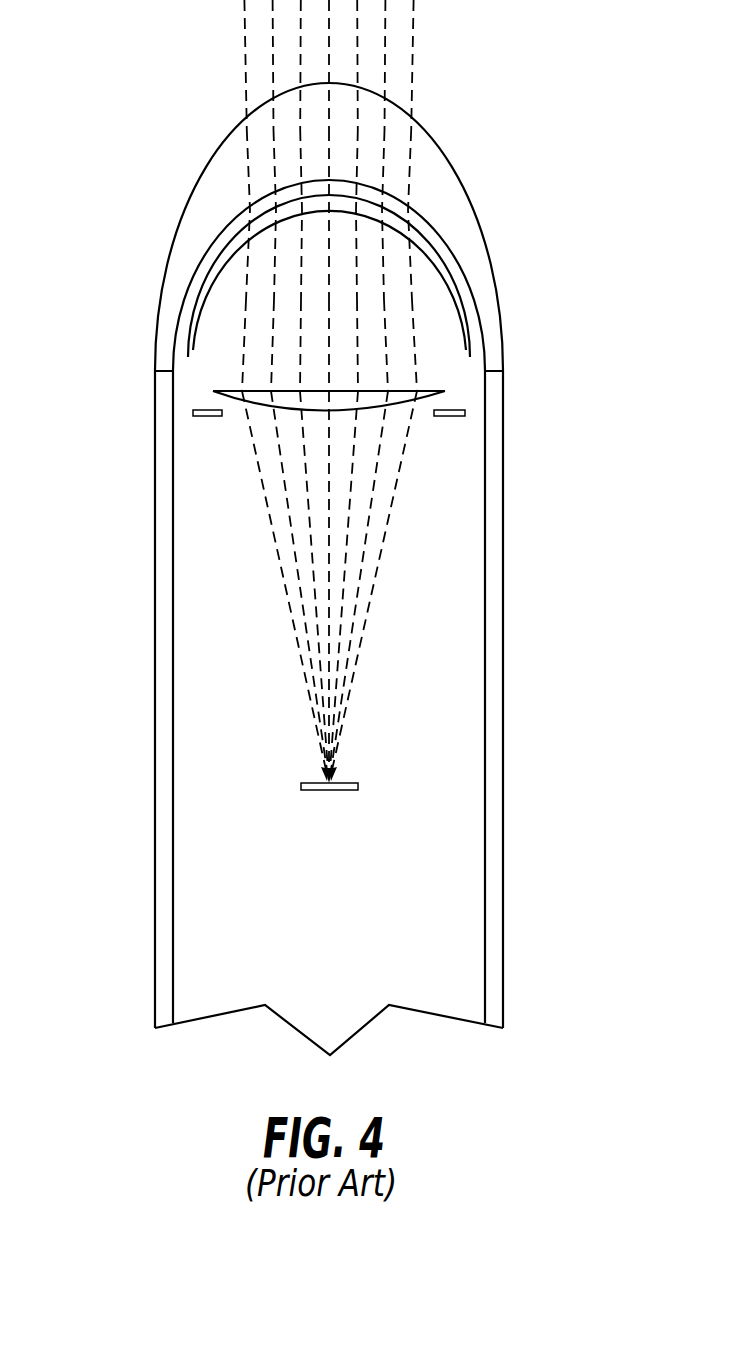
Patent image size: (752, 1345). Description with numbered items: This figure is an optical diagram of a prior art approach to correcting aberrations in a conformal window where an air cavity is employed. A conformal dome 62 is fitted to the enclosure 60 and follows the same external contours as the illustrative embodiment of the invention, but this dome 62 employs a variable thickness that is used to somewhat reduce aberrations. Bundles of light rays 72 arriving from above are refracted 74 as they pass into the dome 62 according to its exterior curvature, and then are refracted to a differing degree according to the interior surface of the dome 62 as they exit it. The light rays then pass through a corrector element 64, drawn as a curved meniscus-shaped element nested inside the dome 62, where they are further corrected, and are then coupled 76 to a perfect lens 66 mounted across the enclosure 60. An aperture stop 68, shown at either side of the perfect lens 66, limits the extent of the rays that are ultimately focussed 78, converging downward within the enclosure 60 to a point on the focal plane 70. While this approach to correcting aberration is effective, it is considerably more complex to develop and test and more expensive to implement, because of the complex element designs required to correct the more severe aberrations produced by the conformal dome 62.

The enclosure 60 is at (503, 870).
The conformal dome 62 is at (483, 235).
The corrector element 64 is at (465, 315).
The perfect lens 66 is at (428, 391).
The aperture stop 68 is at (207, 416).
The focal plane 70 is at (358, 783).
The bundles of light rays 72 is at (244, 45).
The refracted light rays 74 is at (244, 163).
The coupled light rays 76 is at (244, 360).
The focussed light rays 78 is at (290, 615).